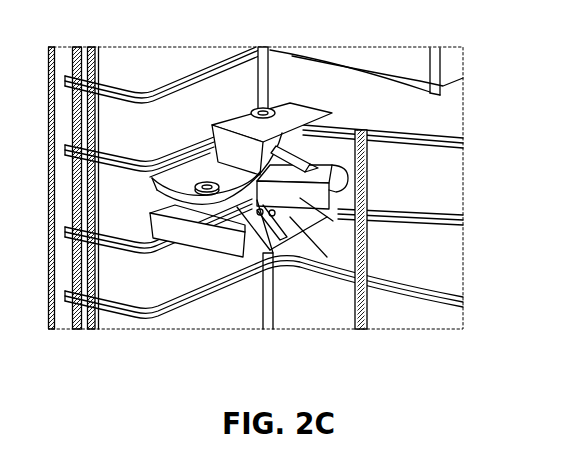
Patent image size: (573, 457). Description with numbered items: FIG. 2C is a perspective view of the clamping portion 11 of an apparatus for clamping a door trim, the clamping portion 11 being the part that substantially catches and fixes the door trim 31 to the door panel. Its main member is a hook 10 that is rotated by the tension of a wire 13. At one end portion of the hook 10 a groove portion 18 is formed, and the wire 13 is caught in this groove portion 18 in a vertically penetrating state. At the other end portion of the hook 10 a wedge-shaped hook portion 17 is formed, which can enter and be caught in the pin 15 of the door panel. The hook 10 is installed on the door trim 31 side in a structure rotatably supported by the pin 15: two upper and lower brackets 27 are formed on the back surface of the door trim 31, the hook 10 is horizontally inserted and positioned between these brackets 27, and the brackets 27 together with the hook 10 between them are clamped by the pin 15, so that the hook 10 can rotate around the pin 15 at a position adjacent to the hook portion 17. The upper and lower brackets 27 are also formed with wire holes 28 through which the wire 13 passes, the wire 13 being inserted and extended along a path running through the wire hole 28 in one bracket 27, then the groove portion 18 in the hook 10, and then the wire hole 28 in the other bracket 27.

The door trim 31 is at (118, 116).
The pin 15 is at (207, 180).
The bracket 27 is at (272, 148).
The wire 13 is at (268, 88).
The clamping portion 11 is at (346, 153).
The groove portion 18 is at (345, 156).
The hook portion 17 is at (268, 287).
The wire hole 28 is at (287, 258).
The hook 10 is at (330, 222).